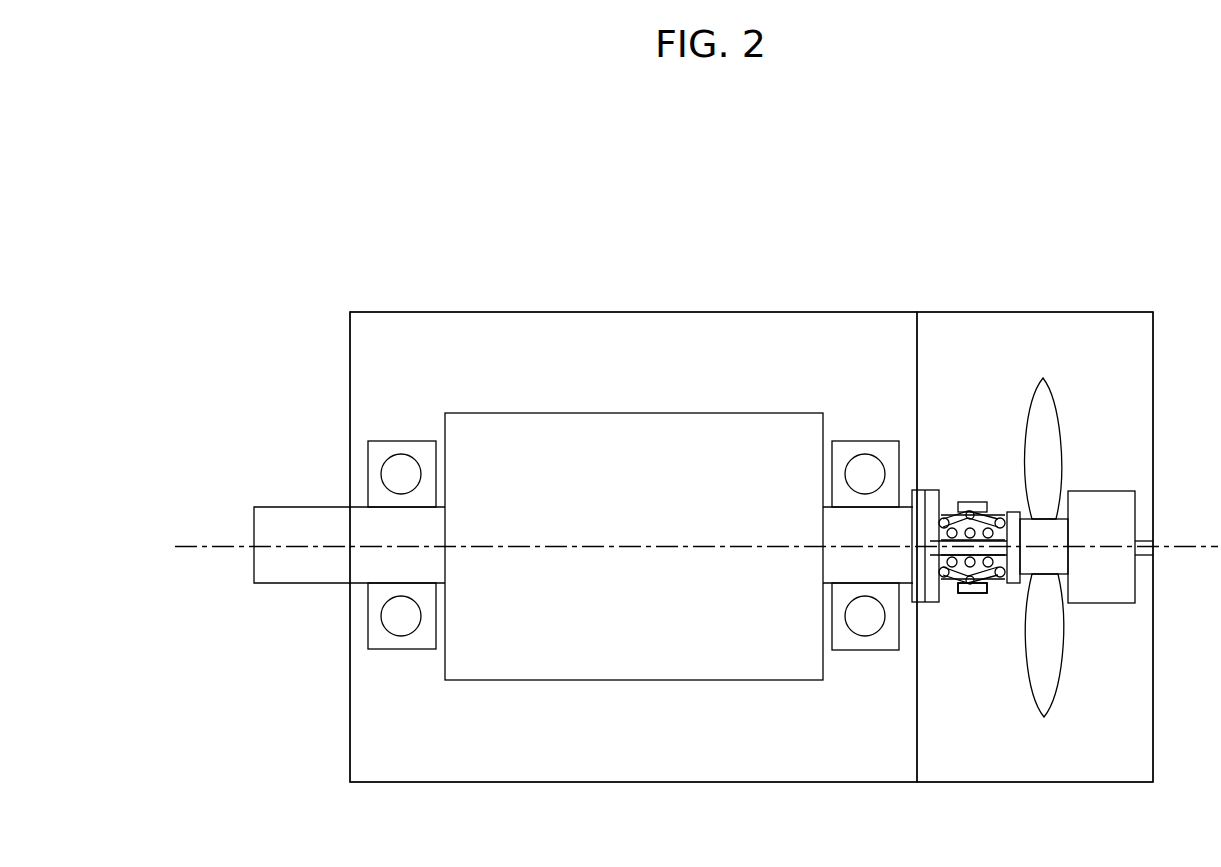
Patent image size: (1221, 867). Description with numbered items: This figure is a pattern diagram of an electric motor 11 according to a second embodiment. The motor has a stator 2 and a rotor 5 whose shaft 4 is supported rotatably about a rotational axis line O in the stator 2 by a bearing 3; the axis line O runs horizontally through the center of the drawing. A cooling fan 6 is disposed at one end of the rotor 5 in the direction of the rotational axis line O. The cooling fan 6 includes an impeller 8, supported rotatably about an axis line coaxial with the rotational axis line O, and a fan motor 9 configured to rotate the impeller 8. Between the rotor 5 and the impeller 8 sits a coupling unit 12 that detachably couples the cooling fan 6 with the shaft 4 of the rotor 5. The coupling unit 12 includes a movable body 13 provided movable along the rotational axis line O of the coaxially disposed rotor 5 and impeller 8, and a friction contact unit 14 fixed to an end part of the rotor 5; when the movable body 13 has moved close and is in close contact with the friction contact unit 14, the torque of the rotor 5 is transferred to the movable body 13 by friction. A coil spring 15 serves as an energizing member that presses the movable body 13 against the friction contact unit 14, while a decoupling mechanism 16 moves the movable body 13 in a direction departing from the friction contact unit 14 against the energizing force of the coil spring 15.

The rotational axis line O is at (212, 545).
The motor unit 11 is at (895, 151).
The stator 2 is at (554, 312).
The cooling fan 6 is at (1130, 391).
The rotor 5 is at (657, 680).
The shaft 4 is at (838, 590).
The bearing 3 is at (393, 441).
The movable body 13 is at (935, 490).
The friction contact unit 14 is at (918, 527).
The coupling unit 12 is at (970, 482).
The coil spring 15 is at (993, 588).
The decoupling mechanism 16 is at (970, 598).
The fan motor 9 is at (1135, 512).
The impeller 8 is at (1043, 378).